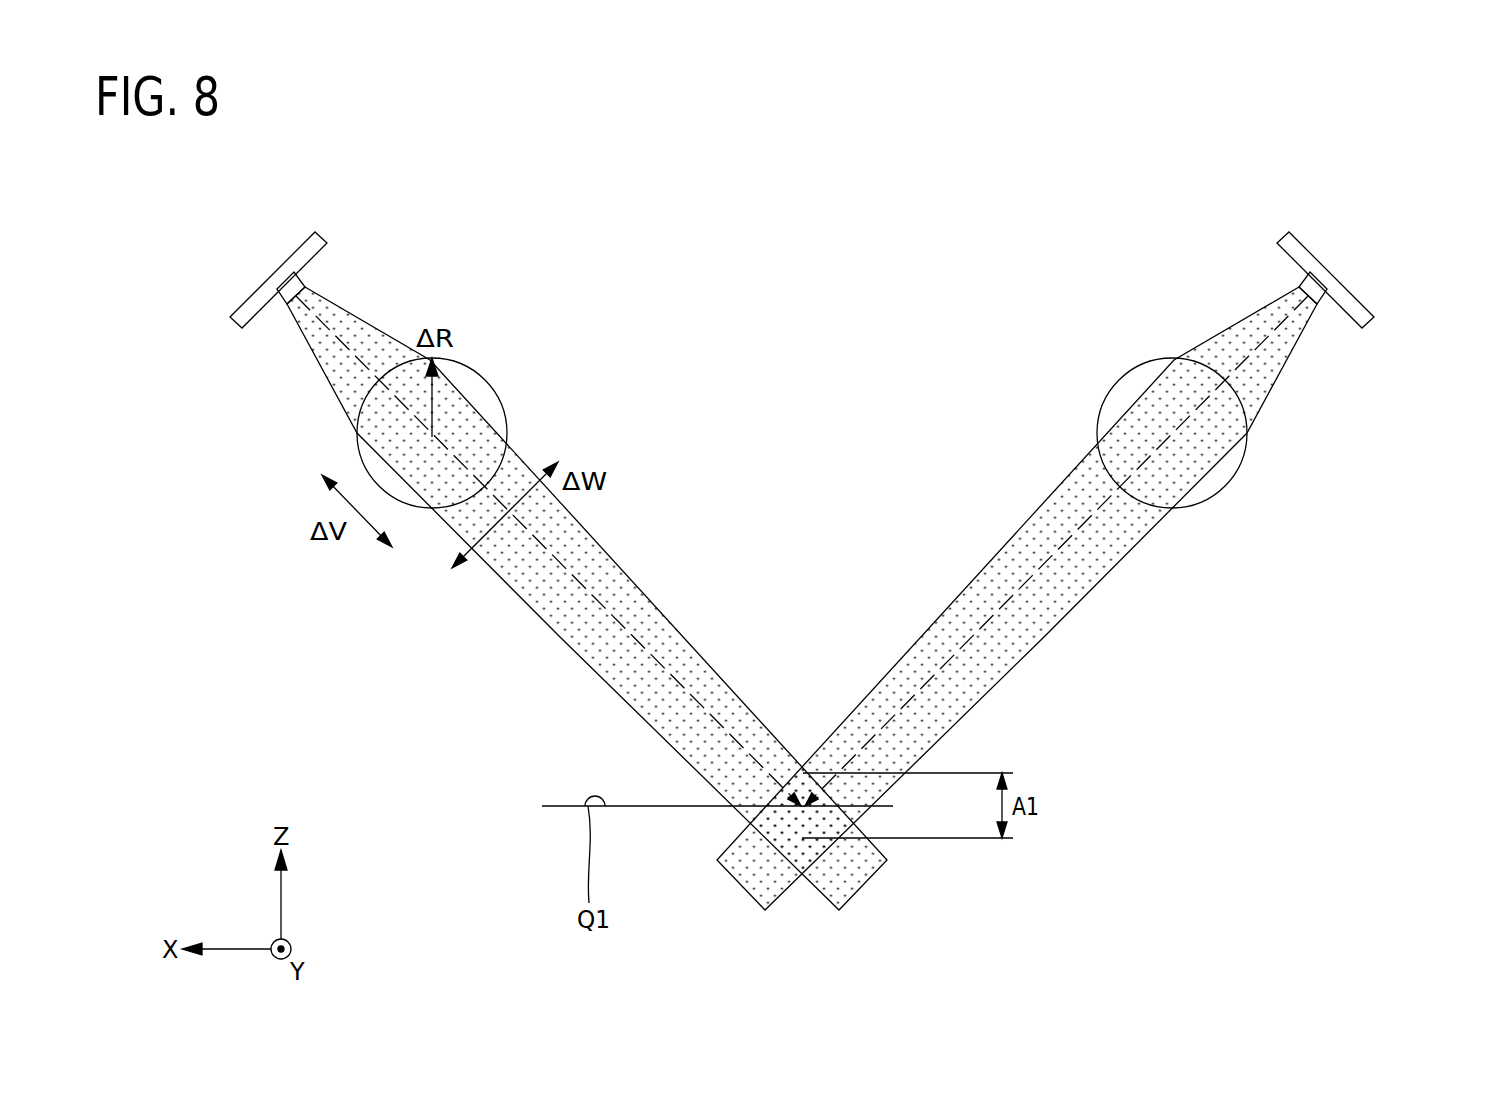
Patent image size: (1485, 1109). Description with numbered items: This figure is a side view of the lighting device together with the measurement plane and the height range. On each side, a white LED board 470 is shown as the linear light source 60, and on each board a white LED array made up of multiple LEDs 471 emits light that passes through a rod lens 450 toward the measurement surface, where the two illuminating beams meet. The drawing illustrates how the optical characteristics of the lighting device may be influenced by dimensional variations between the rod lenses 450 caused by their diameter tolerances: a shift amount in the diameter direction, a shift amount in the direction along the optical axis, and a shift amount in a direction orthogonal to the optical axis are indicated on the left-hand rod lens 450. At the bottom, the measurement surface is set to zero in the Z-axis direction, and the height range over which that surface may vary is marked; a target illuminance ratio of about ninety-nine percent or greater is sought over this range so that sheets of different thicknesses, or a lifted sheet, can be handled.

The white LED board 470 is at (297, 253).
The LED 471 is at (280, 304).
The rod lens 450 is at (1226, 488).
The linear light source 60 is at (222, 333).